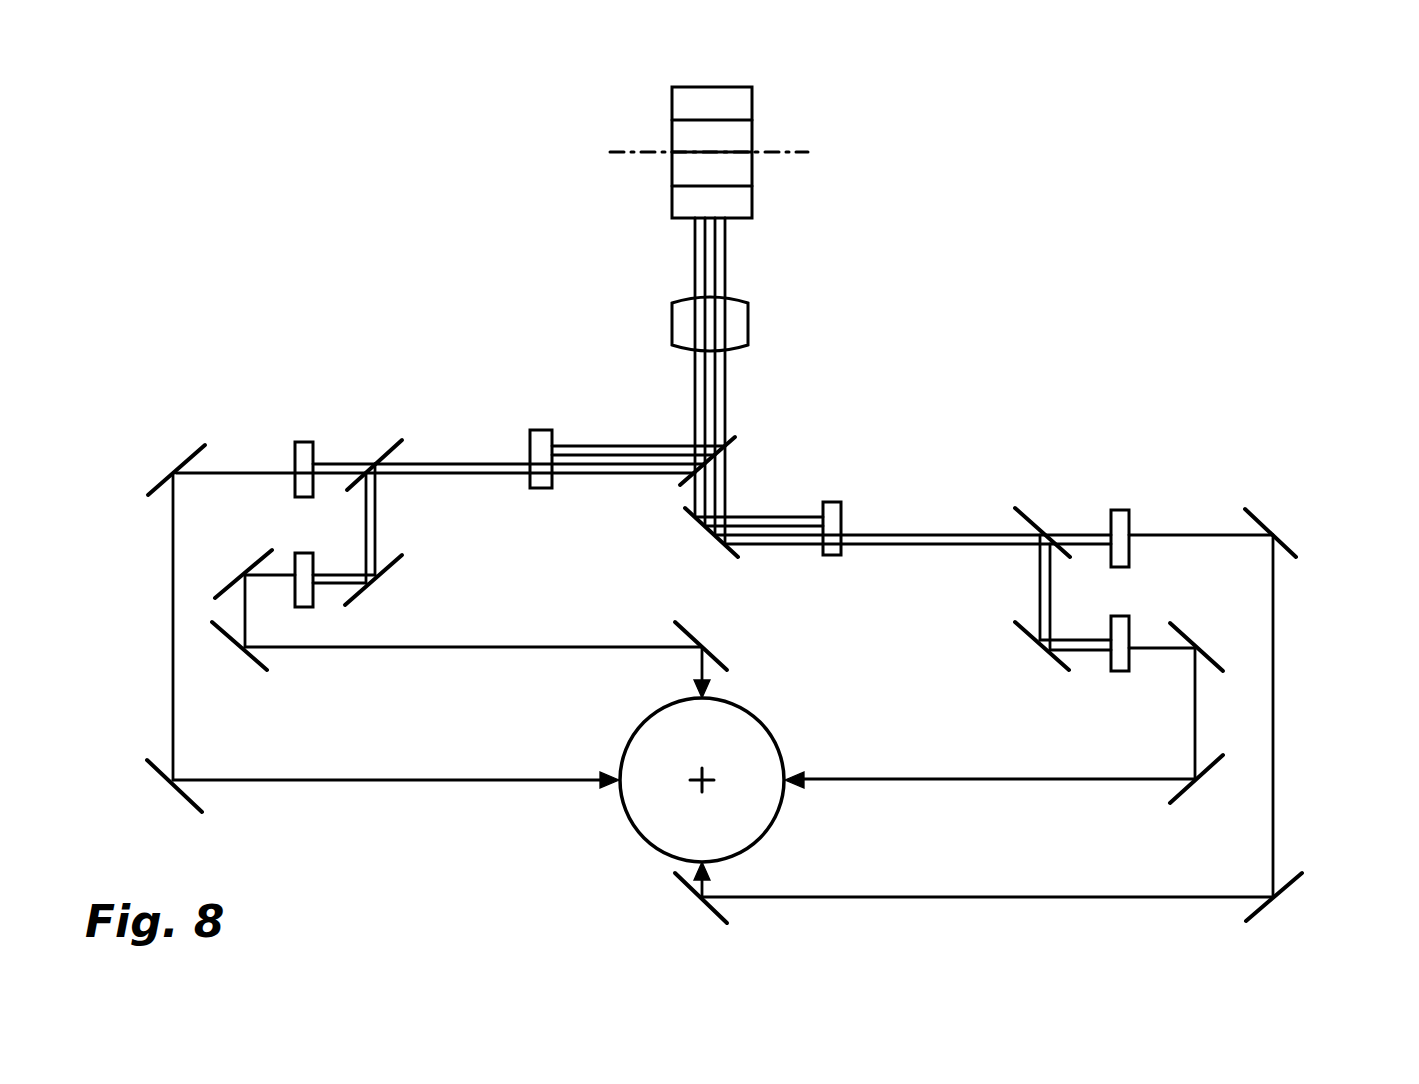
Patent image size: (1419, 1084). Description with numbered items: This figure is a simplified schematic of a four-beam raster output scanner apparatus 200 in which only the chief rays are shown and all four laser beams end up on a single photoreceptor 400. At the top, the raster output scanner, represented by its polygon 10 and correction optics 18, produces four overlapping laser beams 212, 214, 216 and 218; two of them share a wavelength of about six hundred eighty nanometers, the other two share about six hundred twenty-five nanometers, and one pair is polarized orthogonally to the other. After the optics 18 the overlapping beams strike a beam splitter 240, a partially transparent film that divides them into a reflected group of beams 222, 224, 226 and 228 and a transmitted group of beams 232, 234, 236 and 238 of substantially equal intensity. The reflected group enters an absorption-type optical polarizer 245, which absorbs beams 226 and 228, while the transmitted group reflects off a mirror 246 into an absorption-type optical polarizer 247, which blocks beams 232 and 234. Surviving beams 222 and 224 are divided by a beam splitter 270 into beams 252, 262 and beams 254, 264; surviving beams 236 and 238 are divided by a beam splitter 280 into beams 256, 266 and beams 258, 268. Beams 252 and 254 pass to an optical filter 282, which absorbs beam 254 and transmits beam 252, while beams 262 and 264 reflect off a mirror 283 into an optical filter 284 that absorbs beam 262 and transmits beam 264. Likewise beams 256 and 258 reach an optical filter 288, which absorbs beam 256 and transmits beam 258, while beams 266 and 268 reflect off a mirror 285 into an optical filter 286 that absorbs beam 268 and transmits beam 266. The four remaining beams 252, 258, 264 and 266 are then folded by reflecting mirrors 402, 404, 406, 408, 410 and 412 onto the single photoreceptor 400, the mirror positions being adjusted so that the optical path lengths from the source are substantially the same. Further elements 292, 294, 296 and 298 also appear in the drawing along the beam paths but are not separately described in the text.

The polygon 10 is at (740, 108).
The correction optics 18 is at (745, 318).
The apparatus 200 is at (1108, 124).
The laser beam 212 is at (694, 425).
The laser beam 214 is at (700, 395).
The laser beam 216 is at (727, 400).
The laser beam 218 is at (718, 418).
The beam 222 is at (520, 474).
The beam 224 is at (500, 465).
The beam 226 is at (585, 445).
The beam 228 is at (627, 455).
The beam 232 is at (795, 517).
The beam 234 is at (743, 517).
The beam 236 is at (863, 548).
The beam 238 is at (890, 535).
The beam splitter 240 is at (733, 442).
The absorption-type optical polarizer 245 is at (540, 430).
The mirror 246 is at (712, 548).
The absorption-type optical polarizer 247 is at (833, 500).
The beam 252 is at (342, 478).
The beam 254 is at (343, 465).
The beam 256 is at (1083, 547).
The beam 258 is at (1065, 535).
The beam 262 is at (330, 588).
The beam 264 is at (375, 527).
The beam 266 is at (1083, 650).
The beam 268 is at (1050, 635).
The beam splitter 270 is at (390, 440).
The beam splitter 280 is at (1030, 508).
The optical filter 282 is at (298, 442).
The mirror 283 is at (392, 572).
The optical filter 284 is at (293, 553).
The mirror 285 is at (1022, 630).
The optical filter 286 is at (1130, 617).
The optical filter 288 is at (1125, 508).
The mirror 292 is at (190, 460).
The mirror 294 is at (232, 582).
The mirror 296 is at (1190, 630).
The mirror 298 is at (1293, 540).
The photoreceptor 400 is at (760, 720).
The reflecting mirror 402 is at (258, 660).
The reflecting mirror 404 is at (188, 802).
The reflecting mirror 406 is at (1195, 790).
The reflecting mirror 408 is at (1290, 880).
The reflecting mirror 410 is at (718, 652).
The reflecting mirror 412 is at (680, 880).